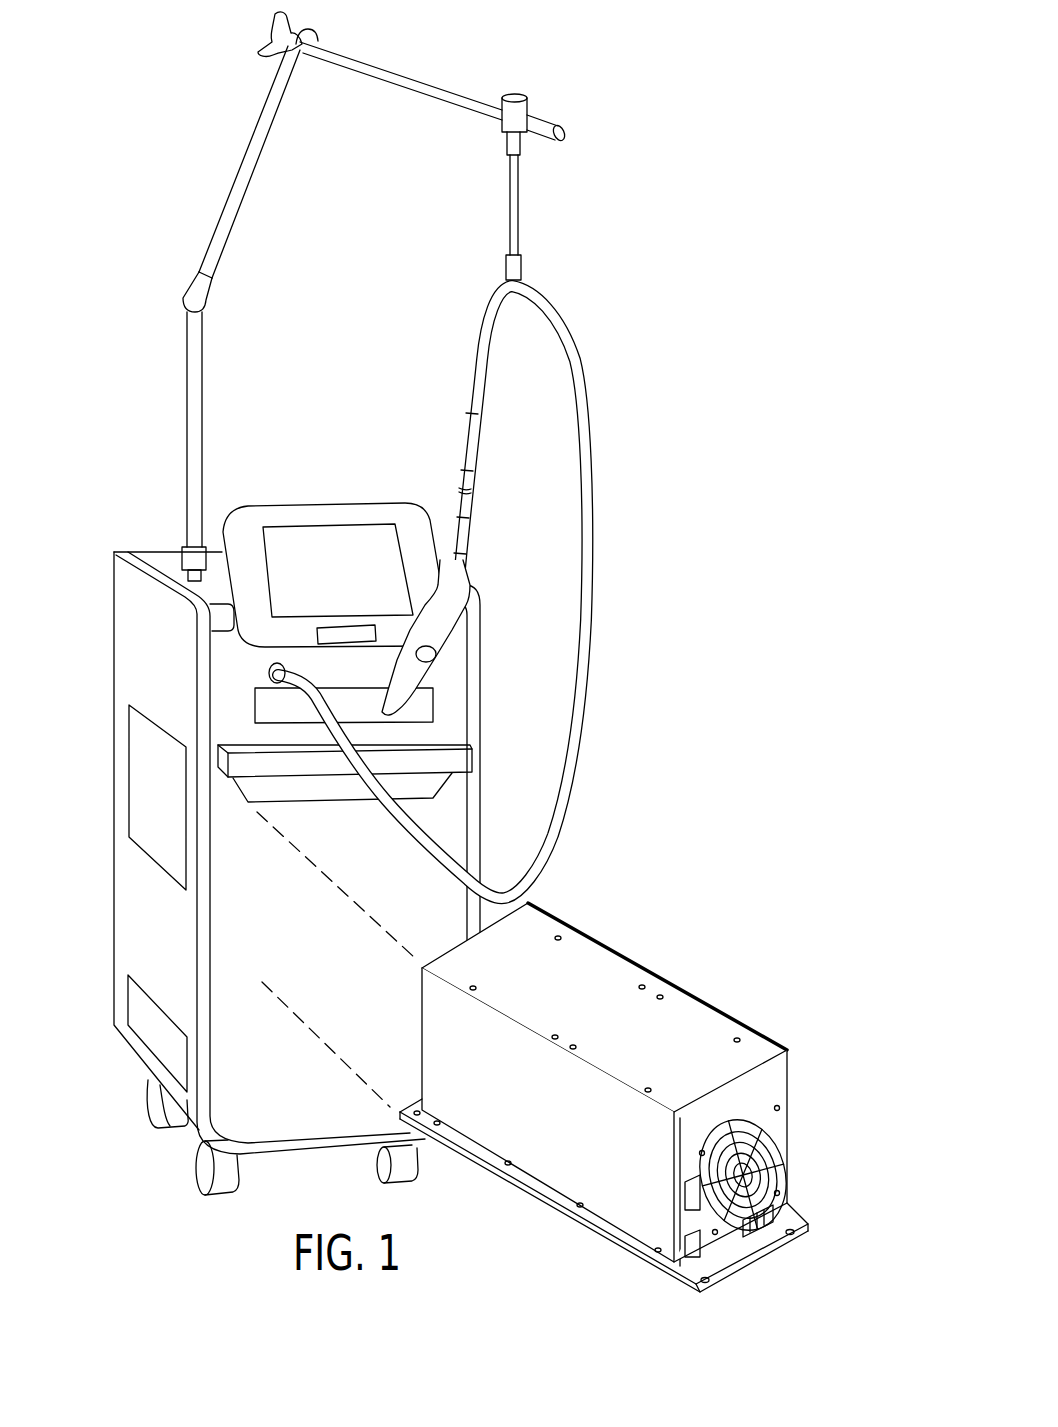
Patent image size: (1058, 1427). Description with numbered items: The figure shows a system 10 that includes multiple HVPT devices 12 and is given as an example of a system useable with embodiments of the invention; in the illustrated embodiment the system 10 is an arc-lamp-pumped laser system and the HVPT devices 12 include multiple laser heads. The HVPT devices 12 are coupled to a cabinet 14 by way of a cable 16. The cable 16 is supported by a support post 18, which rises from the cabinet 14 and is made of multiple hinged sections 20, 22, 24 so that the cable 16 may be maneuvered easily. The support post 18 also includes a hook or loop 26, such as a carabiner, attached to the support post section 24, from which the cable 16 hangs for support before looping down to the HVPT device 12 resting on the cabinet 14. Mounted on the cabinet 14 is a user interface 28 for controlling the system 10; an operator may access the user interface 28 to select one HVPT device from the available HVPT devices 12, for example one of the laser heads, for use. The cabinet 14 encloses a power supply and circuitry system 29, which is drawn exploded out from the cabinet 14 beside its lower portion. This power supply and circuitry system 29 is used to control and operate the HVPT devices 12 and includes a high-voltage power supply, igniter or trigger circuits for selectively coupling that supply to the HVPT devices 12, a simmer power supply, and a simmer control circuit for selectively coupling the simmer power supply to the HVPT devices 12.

The system 10 is at (610, 350).
The HVPT devices 12 is at (420, 693).
The cabinet 14 is at (142, 912).
The cable 16 is at (587, 430).
The support post 18 is at (182, 272).
The hinged section 20 is at (188, 427).
The hinged section 22 is at (248, 155).
The hinged section 24 is at (418, 77).
The hook or loop 26 is at (522, 268).
The user interface 28 is at (343, 553).
The power supply and circuitry system 29 is at (682, 990).